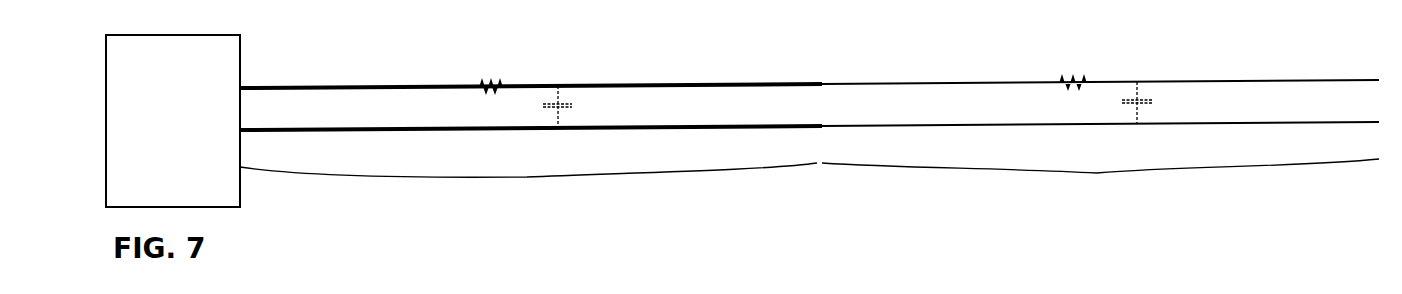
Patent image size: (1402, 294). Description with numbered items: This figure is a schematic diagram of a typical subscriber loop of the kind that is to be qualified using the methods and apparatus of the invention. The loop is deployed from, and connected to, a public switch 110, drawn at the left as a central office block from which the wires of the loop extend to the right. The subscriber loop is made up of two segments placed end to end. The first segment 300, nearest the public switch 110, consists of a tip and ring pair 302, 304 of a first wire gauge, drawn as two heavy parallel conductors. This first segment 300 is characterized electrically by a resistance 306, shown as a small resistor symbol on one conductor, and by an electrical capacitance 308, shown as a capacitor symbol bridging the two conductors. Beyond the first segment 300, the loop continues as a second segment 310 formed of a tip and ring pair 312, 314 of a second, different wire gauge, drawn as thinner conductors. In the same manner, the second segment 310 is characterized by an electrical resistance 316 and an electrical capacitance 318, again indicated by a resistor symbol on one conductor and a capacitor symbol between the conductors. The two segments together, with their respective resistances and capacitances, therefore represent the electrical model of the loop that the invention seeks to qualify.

The public switch 110 is at (240, 67).
The first segment 300 is at (528, 182).
The tip and ring pair 302 is at (355, 132).
The tip and ring pair 304 is at (401, 86).
The resistance 306 is at (486, 78).
The electrical capacitance 308 is at (557, 112).
The second segment 310 is at (1100, 182).
The tip and ring pair 312 is at (1010, 125).
The tip and ring pair 314 is at (917, 82).
The electrical resistance 316 is at (1062, 80).
The electrical capacitance 318 is at (1137, 107).